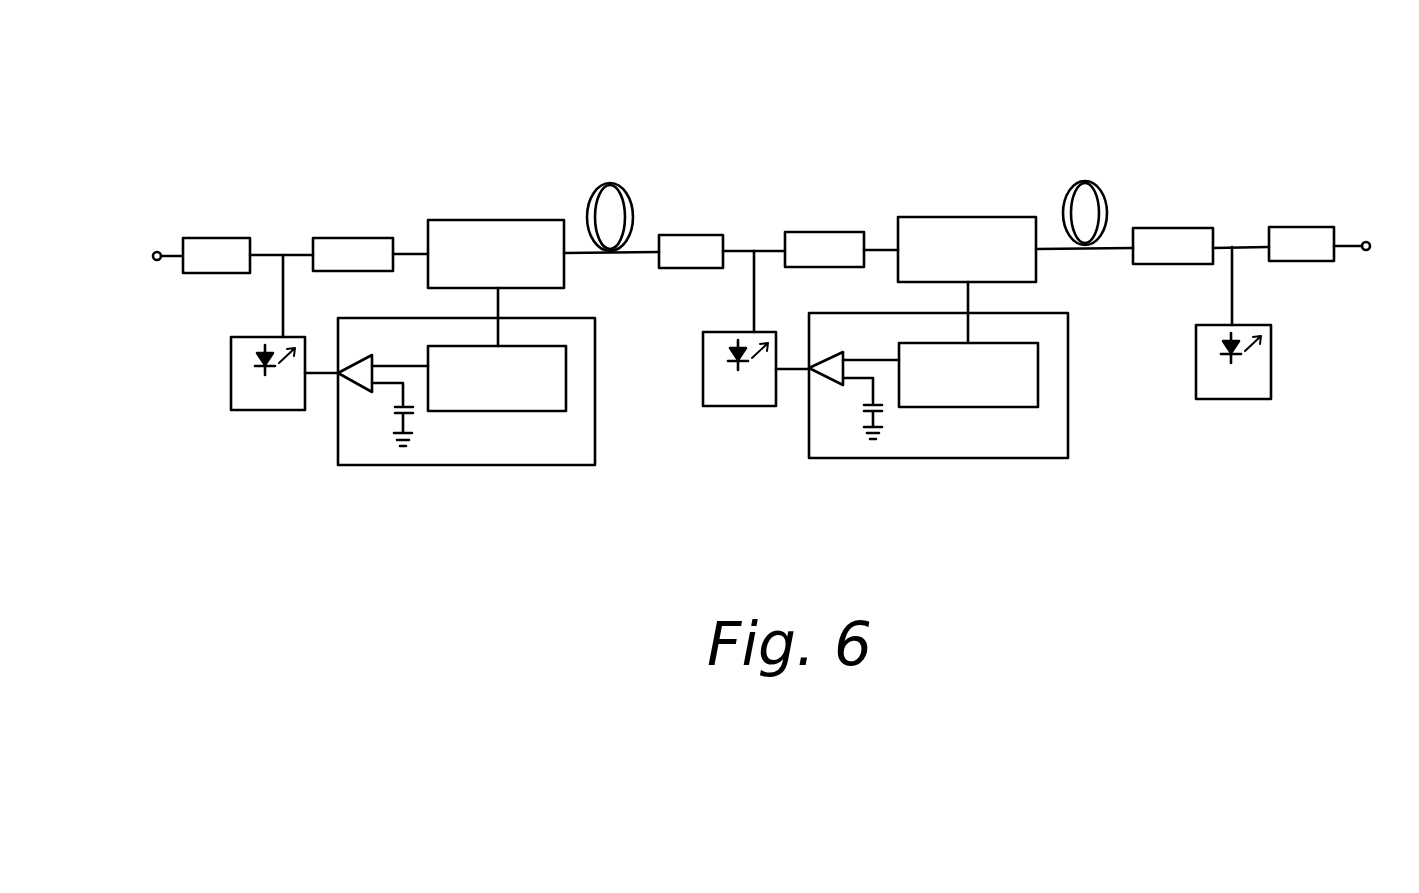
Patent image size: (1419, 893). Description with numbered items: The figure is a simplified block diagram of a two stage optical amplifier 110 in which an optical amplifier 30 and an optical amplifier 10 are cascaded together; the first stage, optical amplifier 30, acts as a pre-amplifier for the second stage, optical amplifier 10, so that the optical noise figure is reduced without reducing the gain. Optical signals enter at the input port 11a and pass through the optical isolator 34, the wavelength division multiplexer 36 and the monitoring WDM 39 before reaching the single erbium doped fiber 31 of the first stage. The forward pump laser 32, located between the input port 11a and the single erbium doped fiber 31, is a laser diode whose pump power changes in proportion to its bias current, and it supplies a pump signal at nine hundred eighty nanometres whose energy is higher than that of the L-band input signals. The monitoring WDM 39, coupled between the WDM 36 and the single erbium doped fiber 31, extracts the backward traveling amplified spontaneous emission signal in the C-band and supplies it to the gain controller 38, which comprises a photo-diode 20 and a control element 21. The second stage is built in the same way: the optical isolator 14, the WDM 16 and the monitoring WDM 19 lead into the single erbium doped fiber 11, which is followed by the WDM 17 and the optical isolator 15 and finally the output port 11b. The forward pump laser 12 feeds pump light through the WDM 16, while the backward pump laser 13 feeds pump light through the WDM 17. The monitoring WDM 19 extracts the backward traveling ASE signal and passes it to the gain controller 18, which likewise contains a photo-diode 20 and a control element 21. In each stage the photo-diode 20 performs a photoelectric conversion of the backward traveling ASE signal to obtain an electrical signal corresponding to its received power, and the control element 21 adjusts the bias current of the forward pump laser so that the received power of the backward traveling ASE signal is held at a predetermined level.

The two stage optical amplifier 110 is at (1158, 52).
The optical amplifier 10 is at (961, 146).
The optical amplifier 30 is at (378, 152).
The input port 11a is at (157, 251).
The output port 11b is at (1366, 241).
The optical isolator 34 is at (231, 237).
The wavelength division multiplexer 36 is at (374, 237).
The monitoring WDM 39 is at (535, 219).
The single erbium doped fiber 31 is at (617, 175).
The forward pump laser 32 is at (247, 414).
The gain controller 38 is at (593, 316).
The optical isolator 14 is at (697, 234).
The wavelength division multiplexer 16 is at (845, 232).
The monitoring WDM 19 is at (975, 217).
The single erbium doped fiber 11 is at (1105, 181).
The wavelength division multiplexer 17 is at (1197, 228).
The optical isolator 15 is at (1318, 227).
The forward pump laser 12 is at (720, 408).
The backward pump laser 13 is at (1272, 355).
The gain controller 18 is at (1048, 313).
The photo-diode 20 is at (566, 370).
The control element 21 is at (357, 384).